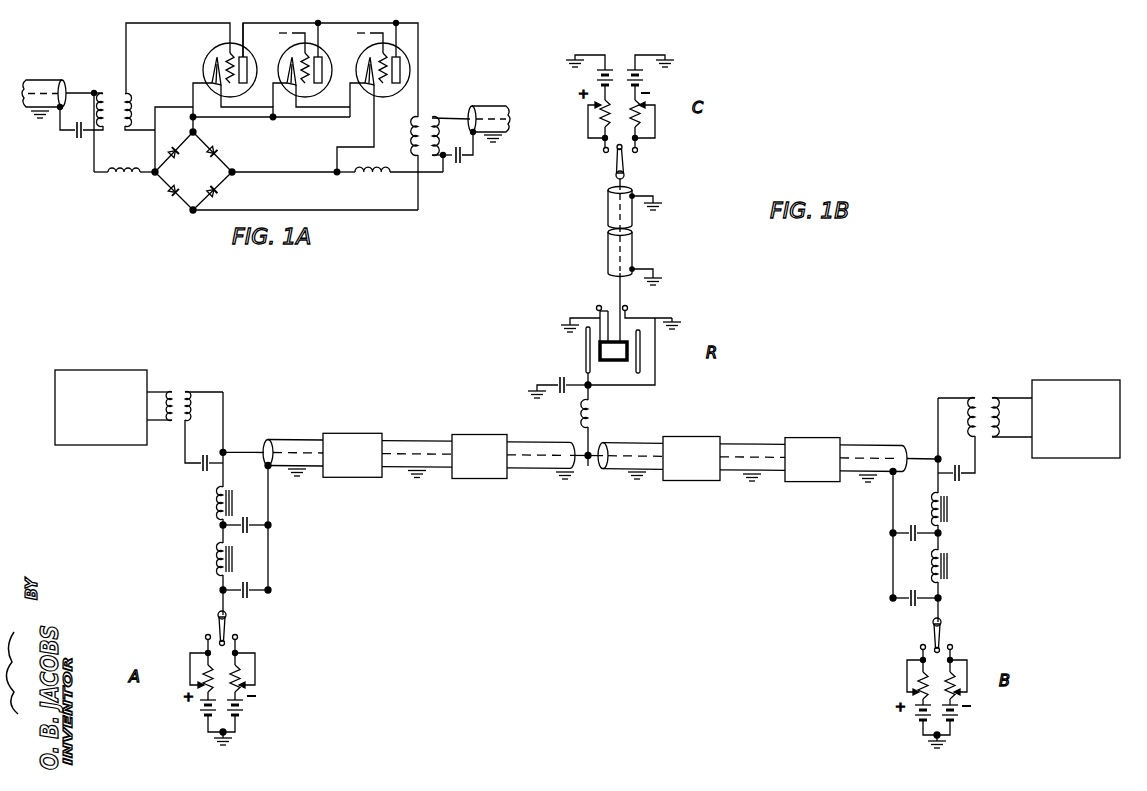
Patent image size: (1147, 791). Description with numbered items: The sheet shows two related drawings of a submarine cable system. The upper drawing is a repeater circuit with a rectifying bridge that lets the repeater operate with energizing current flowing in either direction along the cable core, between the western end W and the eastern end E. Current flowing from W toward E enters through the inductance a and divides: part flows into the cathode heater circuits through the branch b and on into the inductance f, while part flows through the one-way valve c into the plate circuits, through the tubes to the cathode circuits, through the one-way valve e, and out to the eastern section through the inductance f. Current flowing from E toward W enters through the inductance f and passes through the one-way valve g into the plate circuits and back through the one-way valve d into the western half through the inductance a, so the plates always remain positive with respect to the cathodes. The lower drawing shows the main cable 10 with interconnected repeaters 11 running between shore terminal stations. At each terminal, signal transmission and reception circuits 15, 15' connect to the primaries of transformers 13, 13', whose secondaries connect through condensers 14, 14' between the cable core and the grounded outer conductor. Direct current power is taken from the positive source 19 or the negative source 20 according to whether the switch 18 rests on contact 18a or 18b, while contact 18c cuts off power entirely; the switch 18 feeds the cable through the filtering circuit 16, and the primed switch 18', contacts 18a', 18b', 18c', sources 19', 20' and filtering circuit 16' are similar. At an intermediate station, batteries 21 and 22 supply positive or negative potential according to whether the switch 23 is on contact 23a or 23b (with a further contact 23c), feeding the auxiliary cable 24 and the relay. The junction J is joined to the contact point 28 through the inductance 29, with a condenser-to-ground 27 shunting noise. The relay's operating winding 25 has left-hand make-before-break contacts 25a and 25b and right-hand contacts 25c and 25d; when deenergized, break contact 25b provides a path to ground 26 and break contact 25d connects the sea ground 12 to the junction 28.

In FIG. 1A, the western cable direction W is at (57, 87).
In FIG. 1A, the eastern cable direction E is at (473, 101).
In FIG. 1A, the inductance a is at (112, 175).
In FIG. 1A, the branch b is at (154, 149).
In FIG. 1A, the one-way valve c is at (167, 196).
In FIG. 1A, the one-way valve d is at (174, 153).
In FIG. 1A, the one-way valve e is at (219, 148).
In FIG. 1A, the one-way valve g is at (223, 193).
In FIG. 1A, the inductance f is at (368, 180).
In FIG. 1B, the main cable 10 is at (307, 439).
In FIG. 1B, the repeaters 11 is at (450, 436).
In FIG. 1B, the ground contact 12 is at (679, 327).
In FIG. 1B, the transformer 13 is at (185, 410).
In FIG. 1B, the transformer 13' is at (985, 420).
In FIG. 1B, the condenser 14 is at (196, 474).
In FIG. 1B, the condenser 14' is at (965, 484).
In FIG. 1B, the signal transmission and reception circuits 15 is at (101, 392).
In FIG. 1B, the signal transmission and reception circuits 15' is at (1076, 405).
In FIG. 1B, the filtering circuit 16 is at (227, 541).
In FIG. 1B, the filtering circuit 16' is at (937, 546).
In FIG. 1B, the switch 18 is at (206, 619).
In FIG. 1B, the switch 18' is at (916, 633).
In FIG. 1B, the contact 18a is at (187, 640).
In FIG. 1B, the contact 18a' is at (900, 650).
In FIG. 1B, the contact 18b is at (261, 643).
In FIG. 1B, the contact 18b' is at (978, 651).
In FIG. 1B, the contact 18c is at (248, 629).
In FIG. 1B, the contact 18c' is at (962, 637).
In FIG. 1B, the positive source 19 is at (192, 712).
In FIG. 1B, the positive source 19' is at (904, 717).
In FIG. 1B, the negative source 20 is at (252, 718).
In FIG. 1B, the negative source 20' is at (965, 723).
In FIG. 1B, the battery 21 is at (597, 83).
In FIG. 1B, the battery 22 is at (641, 78).
In FIG. 1B, the switch 23 is at (614, 168).
In FIG. 1B, the contact 23a is at (603, 152).
In FIG. 1B, the contact 23b is at (640, 150).
In FIG. 1B, the switch blade contact 23c is at (623, 153).
In FIG. 1B, the auxiliary cable 24 is at (634, 236).
In FIG. 1B, the operating winding 25 is at (614, 362).
In FIG. 1B, the make-before-break contact 25a is at (597, 326).
In FIG. 1B, the break contact 25b is at (598, 305).
In FIG. 1B, the contact 25c is at (625, 337).
In FIG. 1B, the break contact 25d is at (629, 307).
In FIG. 1B, the ground 26 is at (567, 337).
In FIG. 1B, the condenser-to-ground 27 is at (558, 377).
In FIG. 1B, the contact point 28 is at (592, 389).
In FIG. 1B, the inductance 29 is at (596, 418).
In FIG. 1B, the junction J is at (588, 466).